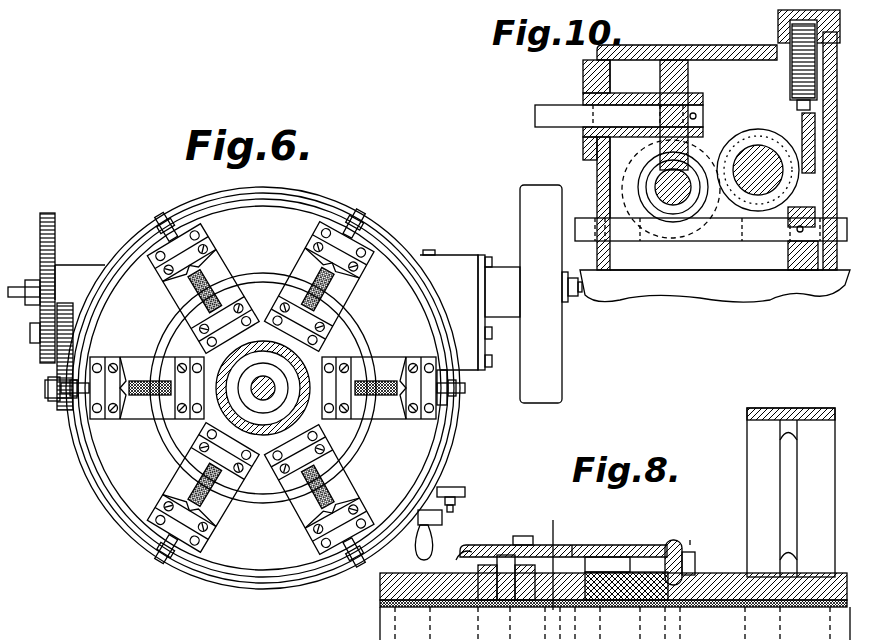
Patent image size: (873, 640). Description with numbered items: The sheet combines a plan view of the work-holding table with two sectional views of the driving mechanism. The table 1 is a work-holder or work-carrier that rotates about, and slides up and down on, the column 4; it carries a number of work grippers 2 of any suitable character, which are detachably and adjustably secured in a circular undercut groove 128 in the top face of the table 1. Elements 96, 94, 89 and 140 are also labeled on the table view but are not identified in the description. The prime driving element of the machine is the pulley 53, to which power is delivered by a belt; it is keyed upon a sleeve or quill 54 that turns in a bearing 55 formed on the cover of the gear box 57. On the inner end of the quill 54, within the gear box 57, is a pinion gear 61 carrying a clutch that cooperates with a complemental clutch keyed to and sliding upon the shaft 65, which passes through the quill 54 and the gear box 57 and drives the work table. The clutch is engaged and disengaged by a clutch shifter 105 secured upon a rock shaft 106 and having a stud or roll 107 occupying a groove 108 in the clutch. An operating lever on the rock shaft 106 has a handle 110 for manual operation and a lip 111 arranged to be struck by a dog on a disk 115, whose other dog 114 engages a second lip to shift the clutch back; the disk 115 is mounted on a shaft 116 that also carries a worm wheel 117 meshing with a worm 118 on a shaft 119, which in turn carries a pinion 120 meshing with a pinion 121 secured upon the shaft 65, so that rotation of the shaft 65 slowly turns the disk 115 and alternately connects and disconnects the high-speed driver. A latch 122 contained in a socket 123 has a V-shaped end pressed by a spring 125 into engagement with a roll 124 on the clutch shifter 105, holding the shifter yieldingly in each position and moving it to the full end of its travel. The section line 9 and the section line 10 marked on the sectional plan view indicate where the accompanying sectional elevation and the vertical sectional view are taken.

In FIG. 6, the table 1 is at (268, 548).
In FIG. 6, the work grippers 2 is at (305, 258).
In FIG. 6, the column 4 is at (305, 362).
In FIG. 6, the shaft 140 is at (264, 378).
In FIG. 6, the circular undercut groove 128 is at (163, 338).
In FIG. 6, the gear 96 is at (57, 252).
In FIG. 6, the pinion gear 94 is at (60, 372).
In FIG. 6, the gear box 57 is at (453, 258).
In FIG. 8, the gear box 57 is at (586, 558).
In FIG. 6, the bearing 55 is at (496, 272).
In FIG. 6, the pulley 53 is at (540, 392).
In FIG. 8, the pulley 53 is at (757, 432).
In FIG. 6, the bolt block 89 is at (463, 442).
In FIG. 6, the disk 115 is at (452, 490).
In FIG. 6, the dog 114 is at (456, 505).
In FIG. 6, the handle 110 is at (430, 535).
In FIG. 6, the lip 111 is at (440, 534).
In FIG. 6, the section line 9— 9 is at (470, 557).
In FIG. 8, the section line 9— 9 is at (656, 525).
In FIG. 8, the section line 10— 10 is at (556, 517).
In FIG. 10, the sleeve or quill 54 is at (763, 166).
In FIG. 8, the sleeve or quill 54 is at (723, 585).
In FIG. 8, the pinion gear 61 is at (620, 575).
In FIG. 10, the shaft 65 is at (760, 195).
In FIG. 8, the shaft 65 is at (615, 623).
In FIG. 10, the clutch shifter 105 is at (795, 198).
In FIG. 8, the clutch shifter 105 is at (572, 545).
In FIG. 10, the rock shaft 106 is at (768, 228).
In FIG. 10, the stud or roll 107 is at (792, 242).
In FIG. 8, the stud or roll 107 is at (508, 568).
In FIG. 10, the groove 108 is at (740, 198).
In FIG. 8, the groove 108 is at (702, 623).
In FIG. 10, the shaft 116 is at (578, 110).
In FIG. 10, the worm wheel 117 is at (688, 73).
In FIG. 10, the worm 118 is at (660, 205).
In FIG. 10, the shaft 119 is at (680, 205).
In FIG. 10, the pinion 120 is at (605, 175).
In FIG. 10, the pinion 121 is at (738, 200).
In FIG. 10, the latch 122 is at (772, 150).
In FIG. 10, the socket 123 is at (775, 44).
In FIG. 10, the roll 124 is at (768, 140).
In FIG. 10, the spring 125 is at (790, 30).